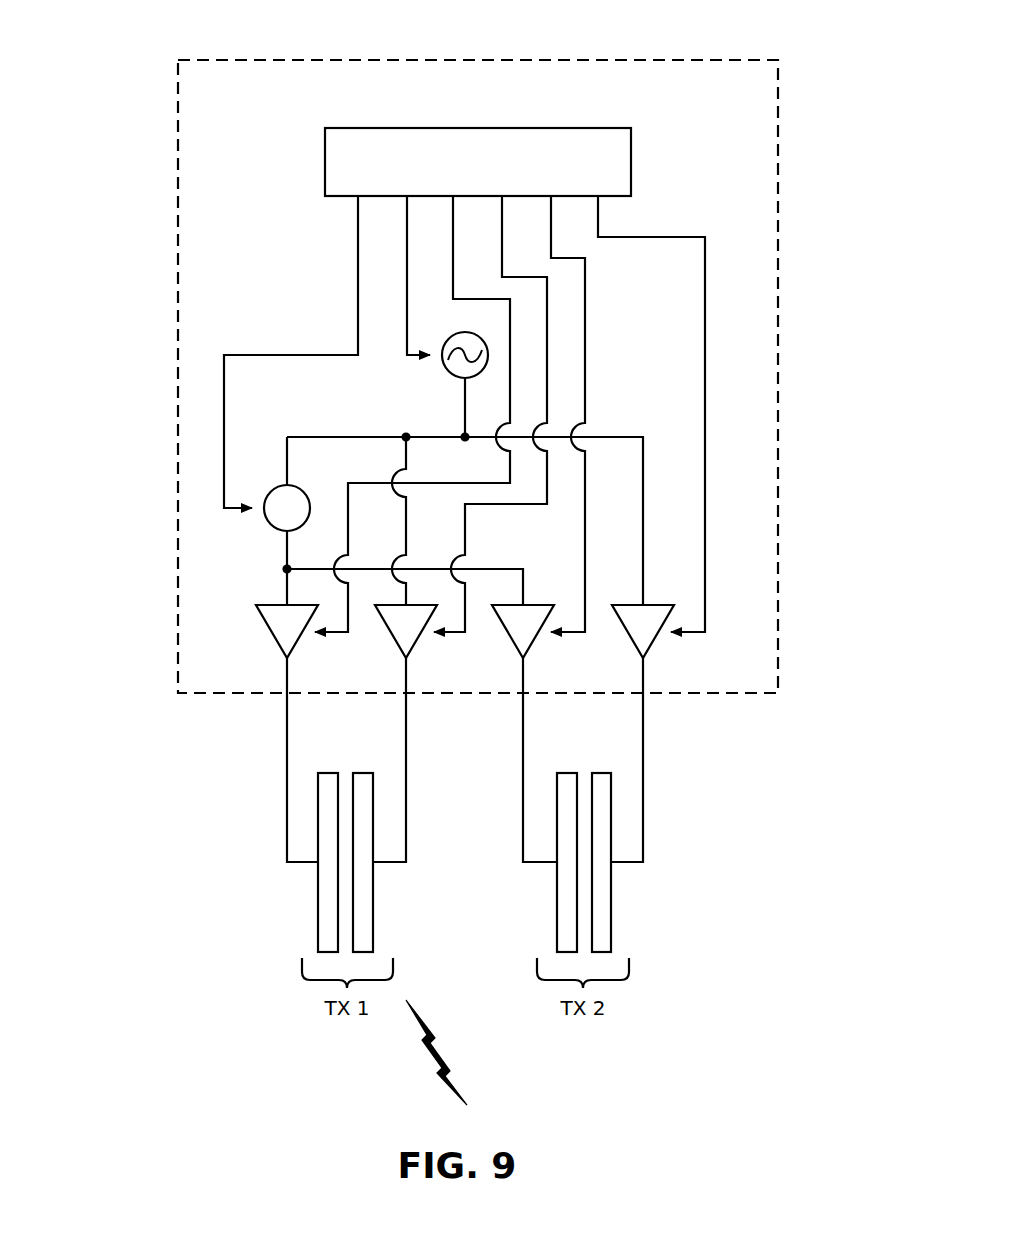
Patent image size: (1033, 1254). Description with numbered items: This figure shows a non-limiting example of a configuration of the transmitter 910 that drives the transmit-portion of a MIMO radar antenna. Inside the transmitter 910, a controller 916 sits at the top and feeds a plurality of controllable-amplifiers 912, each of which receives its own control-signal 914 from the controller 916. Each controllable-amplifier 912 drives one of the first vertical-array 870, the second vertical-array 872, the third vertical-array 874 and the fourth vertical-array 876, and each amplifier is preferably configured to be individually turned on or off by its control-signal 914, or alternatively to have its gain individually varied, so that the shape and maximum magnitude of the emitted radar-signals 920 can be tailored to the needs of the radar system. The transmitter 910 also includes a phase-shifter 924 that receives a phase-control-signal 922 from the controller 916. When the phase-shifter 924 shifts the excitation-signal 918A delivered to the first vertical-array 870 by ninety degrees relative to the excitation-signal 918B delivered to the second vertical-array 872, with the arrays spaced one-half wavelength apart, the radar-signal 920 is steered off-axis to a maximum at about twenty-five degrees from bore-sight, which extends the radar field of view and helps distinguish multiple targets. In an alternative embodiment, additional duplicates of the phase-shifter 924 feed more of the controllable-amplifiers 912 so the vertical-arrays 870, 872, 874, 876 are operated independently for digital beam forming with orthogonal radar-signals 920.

The transmitter 910 is at (690, 60).
The controller 916 is at (588, 128).
The phase-control-signal 922 is at (238, 352).
The phase-shifter 924 is at (265, 521).
The controllable-amplifiers 912 is at (228, 631).
The control-signal 914 is at (272, 639).
The excitation-signal 918A is at (287, 776).
The excitation-signal 918B is at (406, 776).
The first vertical-array 870 is at (318, 880).
The second vertical-array 872 is at (373, 880).
The third vertical-array 874 is at (557, 880).
The fourth vertical-array 876 is at (611, 880).
The radar-signals 920 is at (428, 1046).